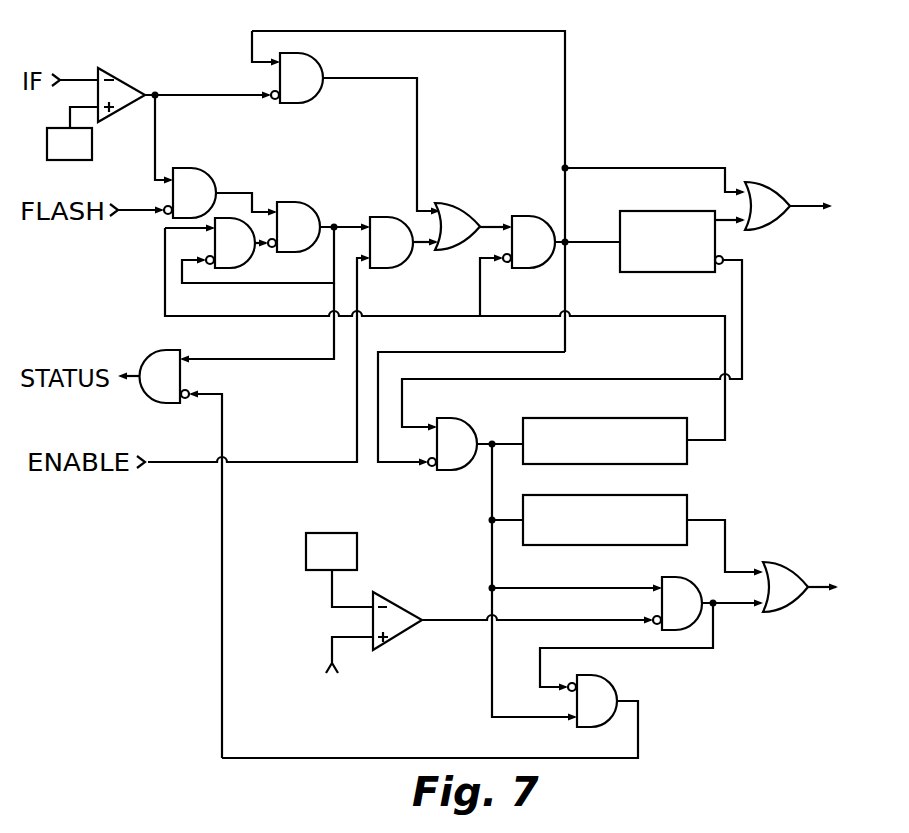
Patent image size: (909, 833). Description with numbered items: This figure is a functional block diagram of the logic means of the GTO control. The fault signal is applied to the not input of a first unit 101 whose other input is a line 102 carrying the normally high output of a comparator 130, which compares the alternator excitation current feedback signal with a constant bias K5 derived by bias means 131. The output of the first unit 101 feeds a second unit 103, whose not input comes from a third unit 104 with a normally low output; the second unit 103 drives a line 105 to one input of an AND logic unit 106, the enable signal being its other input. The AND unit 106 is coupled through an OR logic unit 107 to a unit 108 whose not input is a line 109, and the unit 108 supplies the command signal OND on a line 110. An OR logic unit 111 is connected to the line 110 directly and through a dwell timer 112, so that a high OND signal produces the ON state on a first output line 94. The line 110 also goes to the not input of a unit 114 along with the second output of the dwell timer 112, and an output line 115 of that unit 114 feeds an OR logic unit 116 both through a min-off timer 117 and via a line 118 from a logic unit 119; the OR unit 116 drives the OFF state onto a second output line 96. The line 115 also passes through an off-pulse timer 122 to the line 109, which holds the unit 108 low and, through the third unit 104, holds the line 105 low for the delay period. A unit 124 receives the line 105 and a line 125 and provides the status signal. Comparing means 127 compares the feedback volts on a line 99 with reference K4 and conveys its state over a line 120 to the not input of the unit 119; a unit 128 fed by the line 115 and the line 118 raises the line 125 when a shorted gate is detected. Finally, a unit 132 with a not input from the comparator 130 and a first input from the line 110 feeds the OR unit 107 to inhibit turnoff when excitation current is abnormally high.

The comparator 130 is at (122, 70).
The bias signal deriving means 131 is at (92, 148).
The logic unit 132 is at (300, 103).
The line 102 is at (156, 124).
The first unit 101 is at (208, 162).
The second unit 103 is at (302, 190).
The third unit 104 is at (243, 270).
The line 105 is at (349, 226).
The AND logic unit 106 is at (383, 268).
The OR logic unit 107 is at (470, 187).
The line 110 is at (556, 220).
The logic unit 108 is at (533, 264).
The first timer 112 is at (662, 211).
The OR logic unit 111 is at (769, 184).
The first output line 94 is at (802, 206).
The line 109 is at (652, 316).
The logic unit 124 is at (155, 352).
The line 125 is at (222, 505).
The logic unit 114 is at (458, 470).
The output line 115 is at (492, 442).
The third timer 122 is at (687, 456).
The second timer 117 is at (687, 498).
The logic unit 119 is at (665, 578).
The second output line 96 is at (812, 568).
The OR logic unit 116 is at (790, 606).
The line 118 is at (737, 604).
The logic unit 128 is at (600, 675).
The comparing means 127 is at (393, 640).
The line 120 is at (455, 620).
The line 99 is at (332, 648).